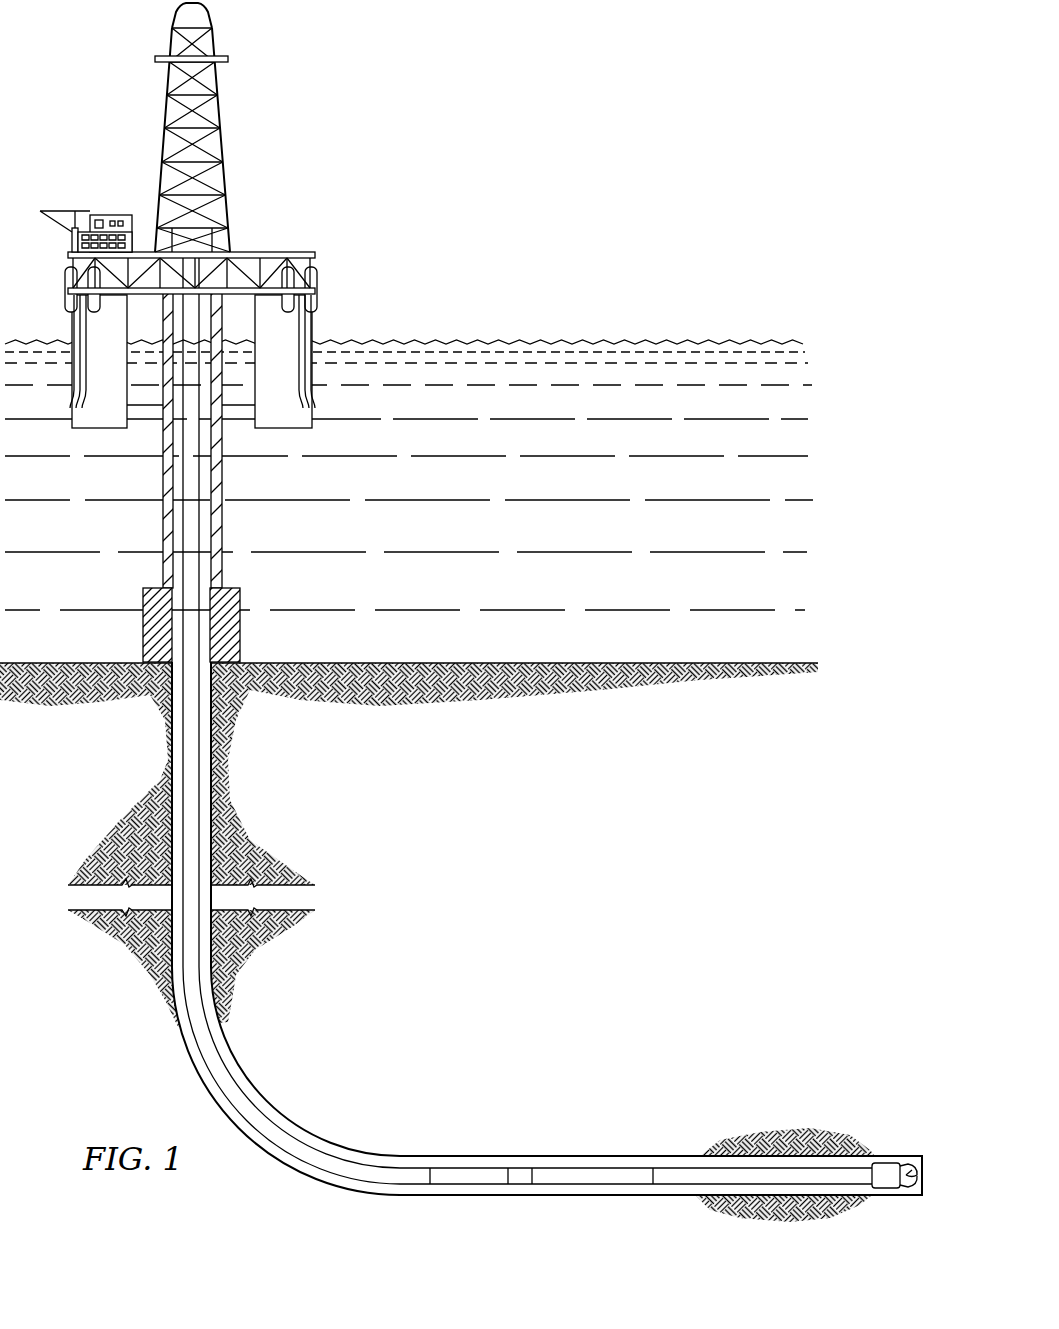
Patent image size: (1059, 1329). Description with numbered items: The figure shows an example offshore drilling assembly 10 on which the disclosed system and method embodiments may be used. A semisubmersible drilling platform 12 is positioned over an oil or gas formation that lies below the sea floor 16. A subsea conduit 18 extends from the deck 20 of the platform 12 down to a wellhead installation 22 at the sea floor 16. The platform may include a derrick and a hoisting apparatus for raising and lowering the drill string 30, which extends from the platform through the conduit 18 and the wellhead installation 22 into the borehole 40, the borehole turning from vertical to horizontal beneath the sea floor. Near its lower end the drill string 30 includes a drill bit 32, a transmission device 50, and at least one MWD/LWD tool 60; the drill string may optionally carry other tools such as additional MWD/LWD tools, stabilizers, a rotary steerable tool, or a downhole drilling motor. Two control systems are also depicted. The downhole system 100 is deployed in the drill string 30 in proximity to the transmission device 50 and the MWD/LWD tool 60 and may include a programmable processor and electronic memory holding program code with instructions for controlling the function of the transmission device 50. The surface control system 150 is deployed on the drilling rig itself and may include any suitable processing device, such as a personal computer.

The offshore drilling assembly 10 is at (313, 128).
The semisubmersible drilling platform 12 is at (300, 250).
The sea floor 16 is at (473, 662).
The subsea conduit 18 is at (222, 527).
The deck 20 is at (318, 291).
The wellhead installation 22 is at (236, 578).
The drill string 30 is at (192, 444).
The drill bit 32 is at (890, 1168).
The borehole 40 is at (175, 770).
The transmission device 50 is at (468, 1173).
The MWD/LWD tool 60 is at (600, 1173).
The downhole control system 100 is at (520, 1175).
The surface control system 150 is at (100, 215).